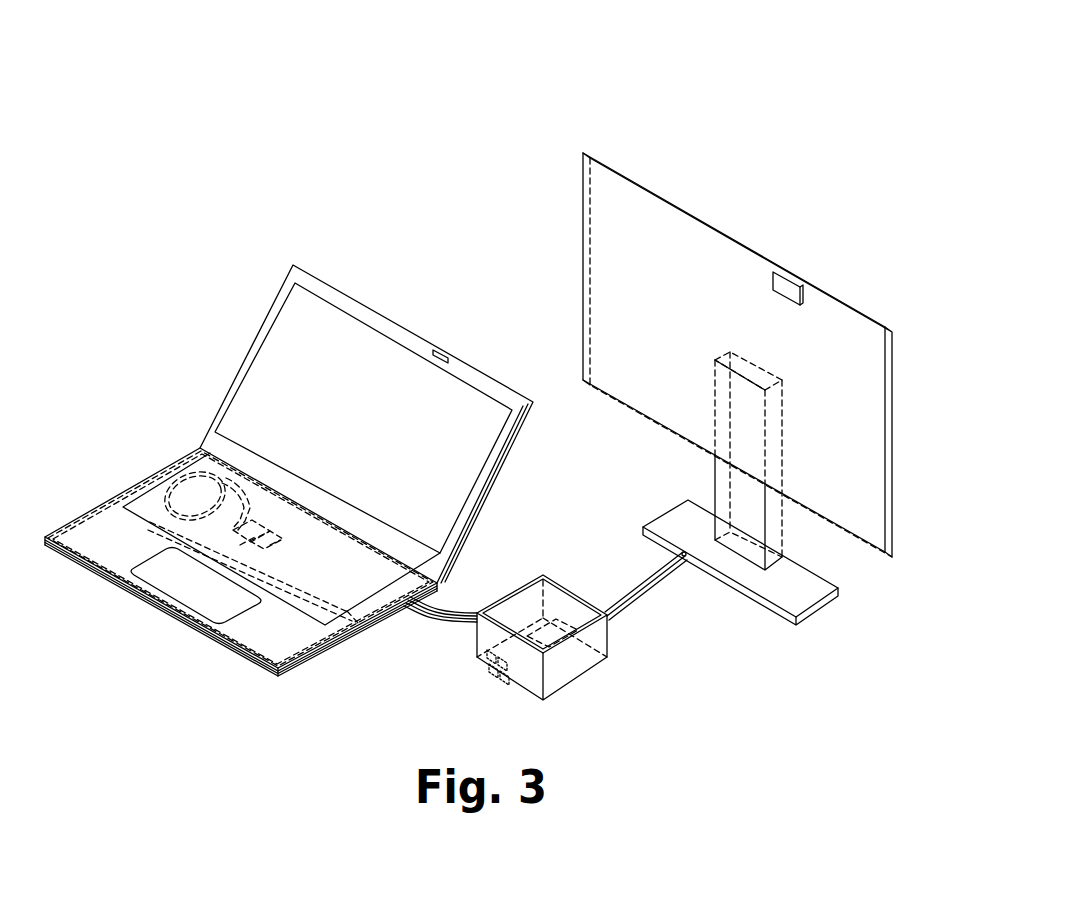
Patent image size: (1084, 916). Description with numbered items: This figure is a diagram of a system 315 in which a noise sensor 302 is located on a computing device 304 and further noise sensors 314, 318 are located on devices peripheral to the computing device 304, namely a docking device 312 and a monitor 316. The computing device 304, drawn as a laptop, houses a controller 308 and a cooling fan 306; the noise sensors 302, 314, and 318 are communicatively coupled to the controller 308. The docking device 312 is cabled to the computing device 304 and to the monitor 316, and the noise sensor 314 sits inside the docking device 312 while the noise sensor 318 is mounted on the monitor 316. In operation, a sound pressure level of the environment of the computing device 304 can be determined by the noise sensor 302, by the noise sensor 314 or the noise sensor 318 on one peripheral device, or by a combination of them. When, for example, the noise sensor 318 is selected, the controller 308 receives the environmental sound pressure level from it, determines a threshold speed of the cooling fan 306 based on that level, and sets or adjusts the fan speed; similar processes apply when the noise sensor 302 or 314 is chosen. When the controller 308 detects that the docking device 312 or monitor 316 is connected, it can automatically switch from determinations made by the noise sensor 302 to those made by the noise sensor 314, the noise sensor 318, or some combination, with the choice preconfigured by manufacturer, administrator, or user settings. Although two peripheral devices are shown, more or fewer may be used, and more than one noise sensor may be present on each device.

The noise sensor 302 is at (442, 349).
The computing device 304 is at (256, 669).
The cooling fan 306 is at (178, 493).
The controller 308 is at (277, 546).
The docking device 312 is at (577, 592).
The noise sensor 314 is at (543, 636).
The system 315 is at (576, 82).
The monitor 316 is at (897, 400).
The noise sensor 318 is at (787, 288).